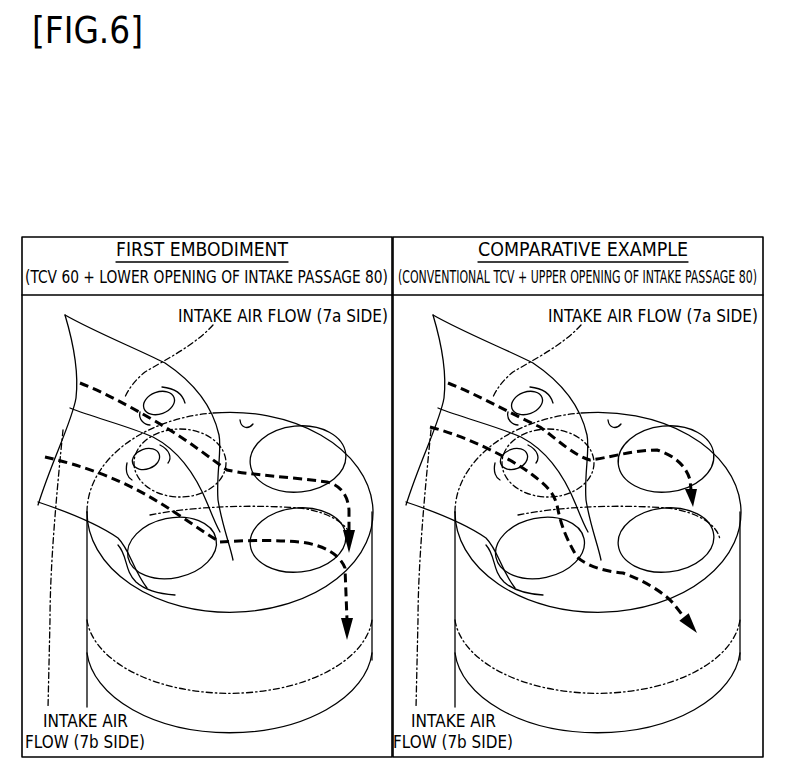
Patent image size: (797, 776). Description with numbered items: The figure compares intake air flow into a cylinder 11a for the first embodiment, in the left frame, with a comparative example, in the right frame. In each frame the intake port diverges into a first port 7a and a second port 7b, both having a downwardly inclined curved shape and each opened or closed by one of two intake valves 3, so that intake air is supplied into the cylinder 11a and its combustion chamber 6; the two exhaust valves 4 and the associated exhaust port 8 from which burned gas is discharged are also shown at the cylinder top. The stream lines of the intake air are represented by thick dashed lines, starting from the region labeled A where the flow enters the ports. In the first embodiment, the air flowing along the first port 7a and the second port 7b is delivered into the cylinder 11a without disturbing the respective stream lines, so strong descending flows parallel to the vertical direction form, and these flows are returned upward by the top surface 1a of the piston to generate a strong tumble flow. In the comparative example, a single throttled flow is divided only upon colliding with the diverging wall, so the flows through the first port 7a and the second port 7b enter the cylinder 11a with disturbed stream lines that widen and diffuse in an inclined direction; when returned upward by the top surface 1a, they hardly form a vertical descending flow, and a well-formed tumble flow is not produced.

The top surface of the piston 1a is at (340, 648).
The cylinder 11a is at (305, 710).
The intake valve 3 is at (213, 422).
The exhaust valve 4 is at (307, 437).
The exhaust port 8 is at (443, 525).
The combustion chamber 6 is at (257, 422).
The first port 7a is at (115, 345).
The second port 7b is at (63, 430).
The intake air flow region A is at (329, 446).